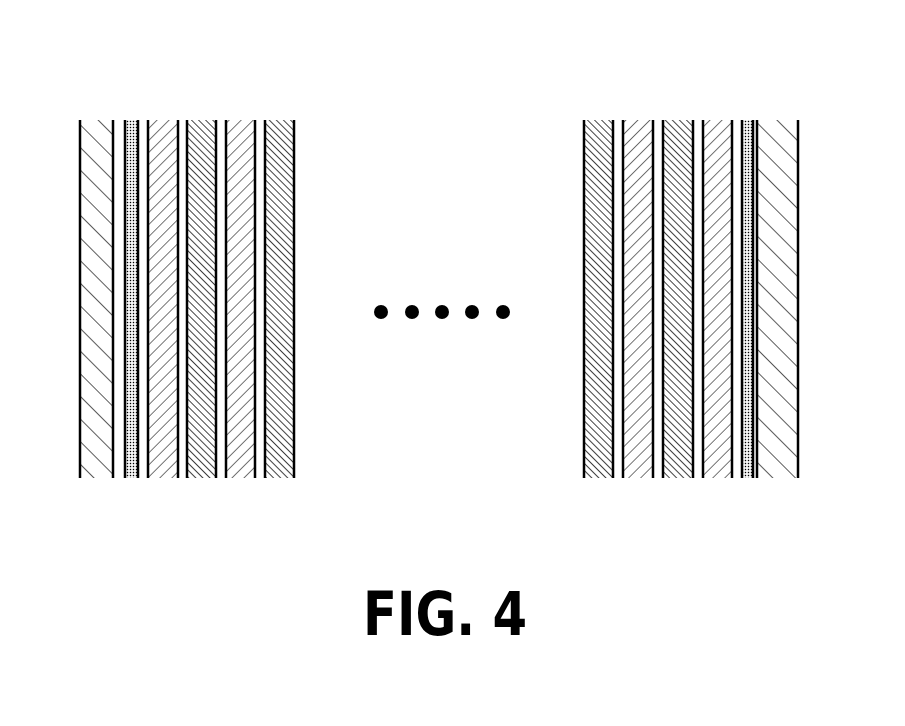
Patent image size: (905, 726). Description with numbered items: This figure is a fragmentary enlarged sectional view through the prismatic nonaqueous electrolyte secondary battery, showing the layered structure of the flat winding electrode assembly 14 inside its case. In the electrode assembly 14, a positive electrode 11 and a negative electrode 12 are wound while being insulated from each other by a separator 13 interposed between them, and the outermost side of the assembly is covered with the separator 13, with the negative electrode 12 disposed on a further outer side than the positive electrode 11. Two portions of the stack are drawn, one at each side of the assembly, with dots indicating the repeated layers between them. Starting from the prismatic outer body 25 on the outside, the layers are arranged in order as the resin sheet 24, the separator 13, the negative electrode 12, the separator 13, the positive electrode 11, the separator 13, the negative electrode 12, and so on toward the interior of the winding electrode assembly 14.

The winding electrode assembly 14 is at (65, 63).
The positive electrode 11 is at (203, 120).
The negative electrode 12 is at (155, 120).
The separator 13 is at (143, 470).
The resin sheet 24 is at (128, 120).
The prismatic outer body 25 is at (102, 478).